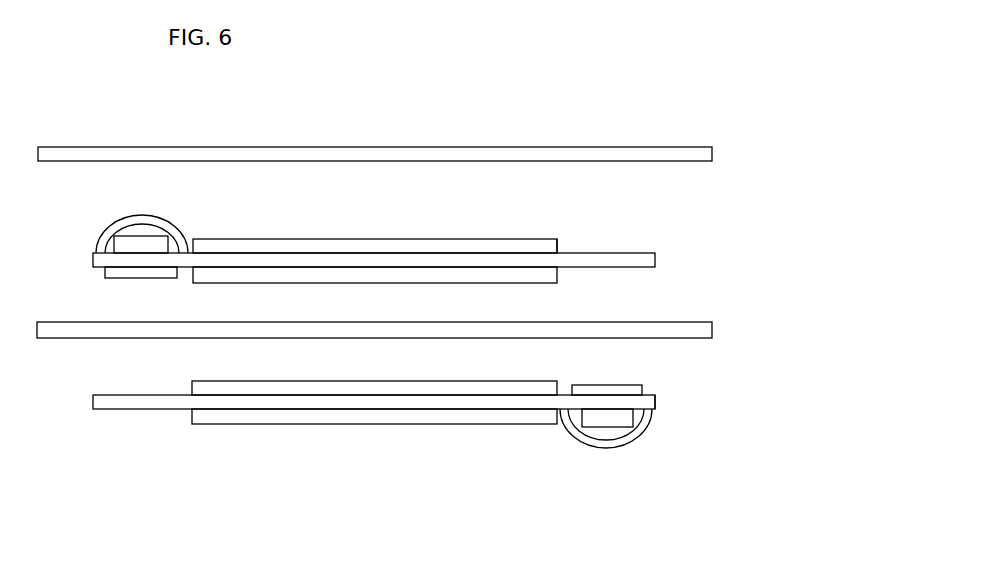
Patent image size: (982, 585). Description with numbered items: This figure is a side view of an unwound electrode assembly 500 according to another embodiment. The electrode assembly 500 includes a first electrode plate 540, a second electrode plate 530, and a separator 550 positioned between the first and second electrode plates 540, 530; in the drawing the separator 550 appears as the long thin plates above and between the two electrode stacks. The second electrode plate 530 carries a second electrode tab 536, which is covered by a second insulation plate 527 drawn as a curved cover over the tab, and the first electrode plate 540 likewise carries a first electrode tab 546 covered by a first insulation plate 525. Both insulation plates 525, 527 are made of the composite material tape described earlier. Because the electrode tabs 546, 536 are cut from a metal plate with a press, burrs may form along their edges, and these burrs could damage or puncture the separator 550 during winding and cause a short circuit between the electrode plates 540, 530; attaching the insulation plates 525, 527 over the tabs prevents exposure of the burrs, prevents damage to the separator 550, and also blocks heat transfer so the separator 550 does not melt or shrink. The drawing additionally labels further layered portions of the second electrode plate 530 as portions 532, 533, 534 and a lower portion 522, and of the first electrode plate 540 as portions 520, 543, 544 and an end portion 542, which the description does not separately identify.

The electrode assembly 500 is at (766, 220).
The separator 550 is at (381, 160).
The second electrode plate 530 is at (615, 238).
The first substrate 532 is at (655, 260).
The first display area edge 533 is at (569, 250).
The first display panel 534 is at (275, 245).
The second electrode tab 536 is at (144, 240).
The second insulation plate 527 is at (104, 234).
The first circuit board 522 is at (113, 272).
The first electrode plate 540 is at (665, 442).
The second substrate 520 is at (635, 389).
The second circuit board 543 is at (565, 388).
The second display panel 544 is at (412, 419).
The first electrode tab 546 is at (615, 422).
The first insulation plate 525 is at (573, 432).
The second substrate end 542 is at (655, 400).